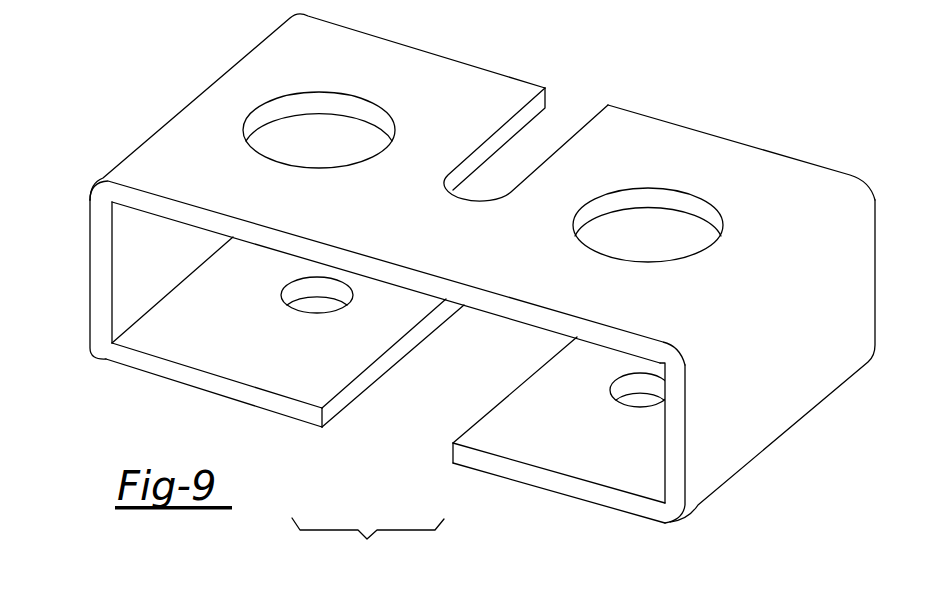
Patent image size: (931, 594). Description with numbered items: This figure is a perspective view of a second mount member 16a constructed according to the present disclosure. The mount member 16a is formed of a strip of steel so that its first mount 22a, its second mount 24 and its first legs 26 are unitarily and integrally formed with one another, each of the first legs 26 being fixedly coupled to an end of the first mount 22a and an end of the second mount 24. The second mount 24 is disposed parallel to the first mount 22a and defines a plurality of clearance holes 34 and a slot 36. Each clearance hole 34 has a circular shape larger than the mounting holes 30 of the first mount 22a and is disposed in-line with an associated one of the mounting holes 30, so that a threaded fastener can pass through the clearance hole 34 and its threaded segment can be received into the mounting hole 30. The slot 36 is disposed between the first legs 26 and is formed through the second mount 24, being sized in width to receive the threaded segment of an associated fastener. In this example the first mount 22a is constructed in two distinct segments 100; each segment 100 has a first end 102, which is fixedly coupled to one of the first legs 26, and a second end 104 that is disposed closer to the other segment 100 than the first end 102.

The second mount member 16a is at (178, 78).
The second mount 24 is at (695, 145).
The clearance holes 34 is at (325, 130).
The slot 36 is at (515, 150).
The first legs 26 is at (97, 258).
The mounting holes 30 is at (305, 286).
The first end 102 is at (130, 360).
The segments 100 is at (300, 410).
The second end 104 is at (497, 400).
The first mount 22a is at (368, 544).